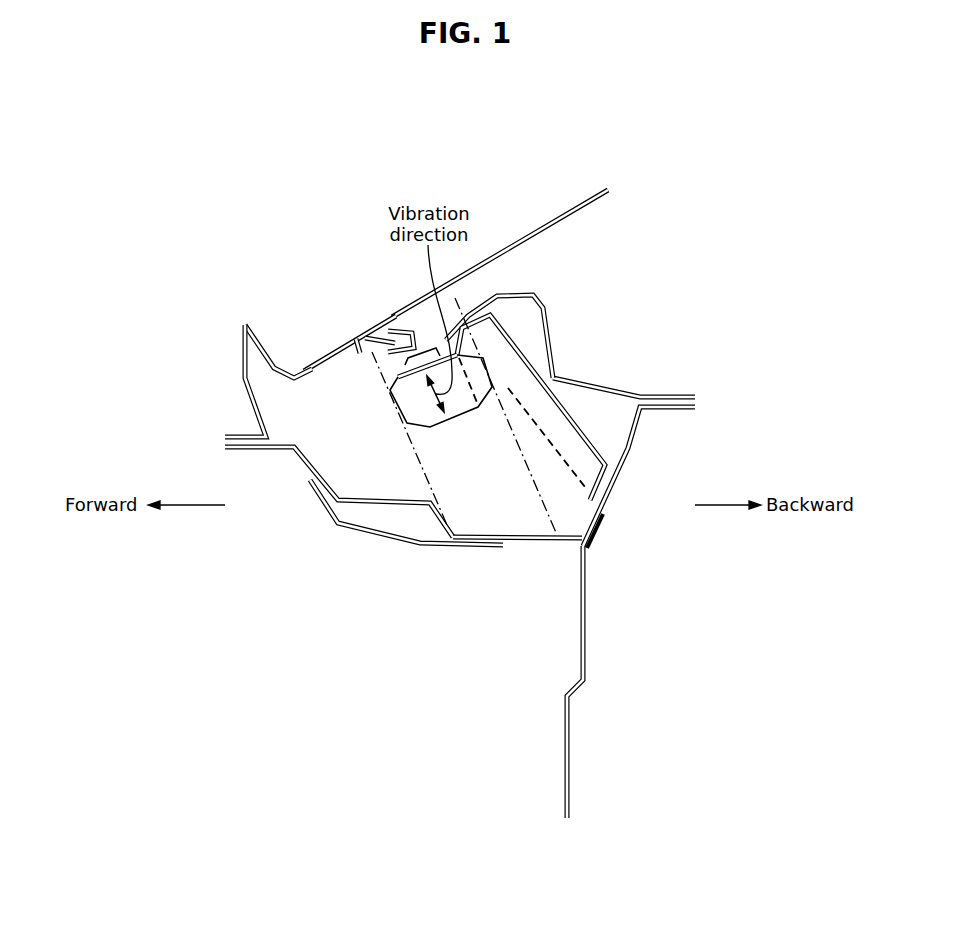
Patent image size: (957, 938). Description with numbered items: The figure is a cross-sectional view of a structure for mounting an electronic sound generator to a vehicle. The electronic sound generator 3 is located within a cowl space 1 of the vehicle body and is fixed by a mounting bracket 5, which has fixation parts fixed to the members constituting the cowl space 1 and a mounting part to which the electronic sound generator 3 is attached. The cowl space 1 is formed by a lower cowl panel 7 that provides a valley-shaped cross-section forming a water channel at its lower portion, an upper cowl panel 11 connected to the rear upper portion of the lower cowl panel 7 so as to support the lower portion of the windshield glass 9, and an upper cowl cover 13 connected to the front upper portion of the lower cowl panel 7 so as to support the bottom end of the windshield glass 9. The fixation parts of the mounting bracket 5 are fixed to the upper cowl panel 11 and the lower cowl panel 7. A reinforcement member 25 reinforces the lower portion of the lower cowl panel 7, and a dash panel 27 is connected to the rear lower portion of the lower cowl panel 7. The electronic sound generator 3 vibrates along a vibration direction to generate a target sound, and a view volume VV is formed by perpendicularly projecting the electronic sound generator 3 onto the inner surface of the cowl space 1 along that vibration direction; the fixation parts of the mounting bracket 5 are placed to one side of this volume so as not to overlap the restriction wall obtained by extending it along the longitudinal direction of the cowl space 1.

The cowl space 1 is at (298, 423).
The electronic sound generator 3 is at (403, 423).
The mounting bracket 5 is at (507, 326).
The lower cowl panel 7 is at (523, 543).
The windshield glass 9 is at (523, 240).
The upper cowl panel 11 is at (611, 390).
The upper cowl cover 13 is at (310, 367).
The reinforcement member 25 is at (393, 538).
The dash panel 27 is at (584, 650).
The view volume VV is at (415, 467).